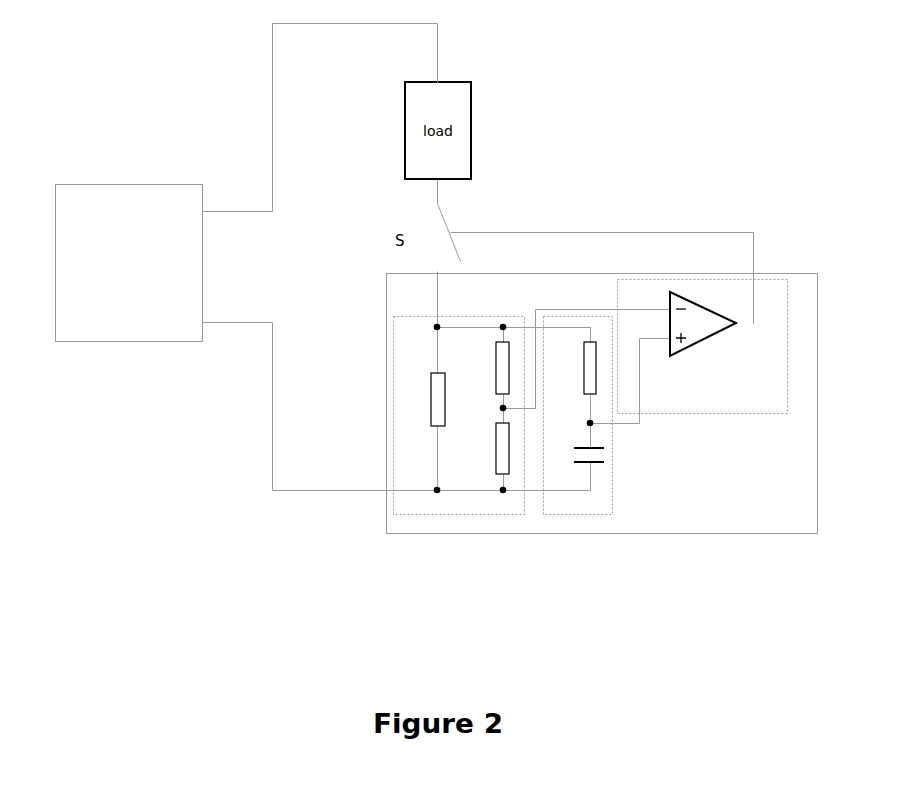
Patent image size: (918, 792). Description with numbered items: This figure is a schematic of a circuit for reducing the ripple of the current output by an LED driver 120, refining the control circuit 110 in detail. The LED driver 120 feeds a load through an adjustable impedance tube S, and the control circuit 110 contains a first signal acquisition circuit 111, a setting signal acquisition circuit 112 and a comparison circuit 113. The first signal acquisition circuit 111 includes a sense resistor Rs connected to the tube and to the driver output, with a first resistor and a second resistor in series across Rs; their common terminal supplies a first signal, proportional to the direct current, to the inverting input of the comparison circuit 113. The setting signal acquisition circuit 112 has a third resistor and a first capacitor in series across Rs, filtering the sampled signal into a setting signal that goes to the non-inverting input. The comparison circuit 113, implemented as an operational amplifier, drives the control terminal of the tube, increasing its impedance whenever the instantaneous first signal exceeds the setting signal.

The control circuit 110 is at (668, 534).
The first signal acquisition circuit 111 is at (430, 514).
The setting signal acquisition circuit 112 is at (562, 514).
The comparison circuit 113 is at (692, 280).
The LED driver 120 is at (112, 184).